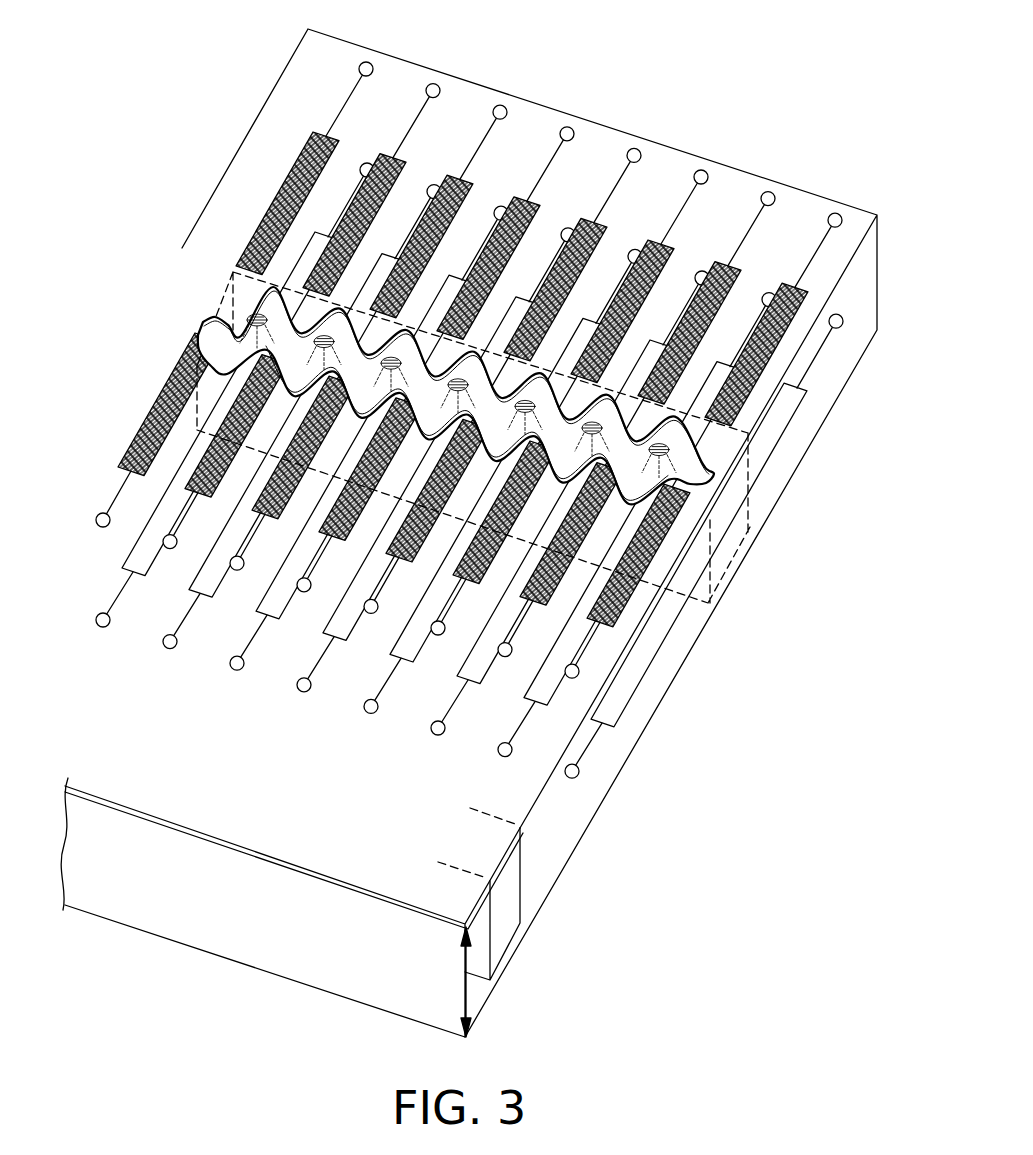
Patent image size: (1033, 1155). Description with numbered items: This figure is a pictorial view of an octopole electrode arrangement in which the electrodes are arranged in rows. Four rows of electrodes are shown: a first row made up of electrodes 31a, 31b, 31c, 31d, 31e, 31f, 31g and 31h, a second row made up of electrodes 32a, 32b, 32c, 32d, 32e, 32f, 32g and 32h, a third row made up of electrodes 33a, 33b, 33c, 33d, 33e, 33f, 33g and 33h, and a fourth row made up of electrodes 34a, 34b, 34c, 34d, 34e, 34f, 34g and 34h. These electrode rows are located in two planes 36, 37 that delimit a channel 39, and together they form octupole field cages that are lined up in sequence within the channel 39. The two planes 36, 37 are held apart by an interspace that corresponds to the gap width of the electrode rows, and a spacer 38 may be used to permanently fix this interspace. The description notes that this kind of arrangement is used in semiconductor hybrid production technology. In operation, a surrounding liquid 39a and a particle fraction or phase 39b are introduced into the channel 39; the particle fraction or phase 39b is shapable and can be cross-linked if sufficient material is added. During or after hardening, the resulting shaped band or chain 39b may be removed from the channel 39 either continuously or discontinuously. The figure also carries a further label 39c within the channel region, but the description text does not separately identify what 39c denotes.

The electrode row 31a is at (141, 478).
The electrode row 31b is at (141, 478).
The electrode row 31c is at (272, 510).
The electrode row 31d is at (339, 532).
The electrode row 31e is at (406, 553).
The electrode row 31f is at (473, 575).
The electrode row 31g is at (540, 597).
The electrode row 31h is at (607, 618).
The electrode row 32a is at (350, 88).
The electrode row 32b is at (350, 88).
The electrode row 32c is at (350, 88).
The electrode row 32d is at (551, 206).
The electrode row 32e is at (618, 227).
The electrode row 32f is at (682, 249).
The electrode row 32g is at (752, 271).
The electrode row 32h is at (872, 212).
The electrode row 33a is at (84, 609).
The electrode row 33b is at (151, 631).
The electrode row 33c is at (218, 652).
The electrode row 33d is at (285, 674).
The electrode row 33e is at (352, 695).
The electrode row 33f is at (419, 717).
The electrode row 33g is at (486, 739).
The electrode row 33h is at (553, 760).
The electrode row 34a is at (330, 218).
The electrode row 34b is at (330, 218).
The electrode row 34c is at (330, 218).
The electrode row 34d is at (330, 218).
The electrode row 34e is at (530, 429).
The electrode row 34f is at (594, 451).
The electrode row 34g is at (664, 473).
The electrode row 34h is at (785, 404).
The plane 36 is at (287, 814).
The plane 37 is at (266, 929).
The spacer 38 is at (520, 916).
The channel 39 is at (453, 366).
The surrounding liquid 39a is at (602, 458).
The particle fraction or phase 39b is at (247, 300).
The actuator bending portion 39c is at (640, 424).